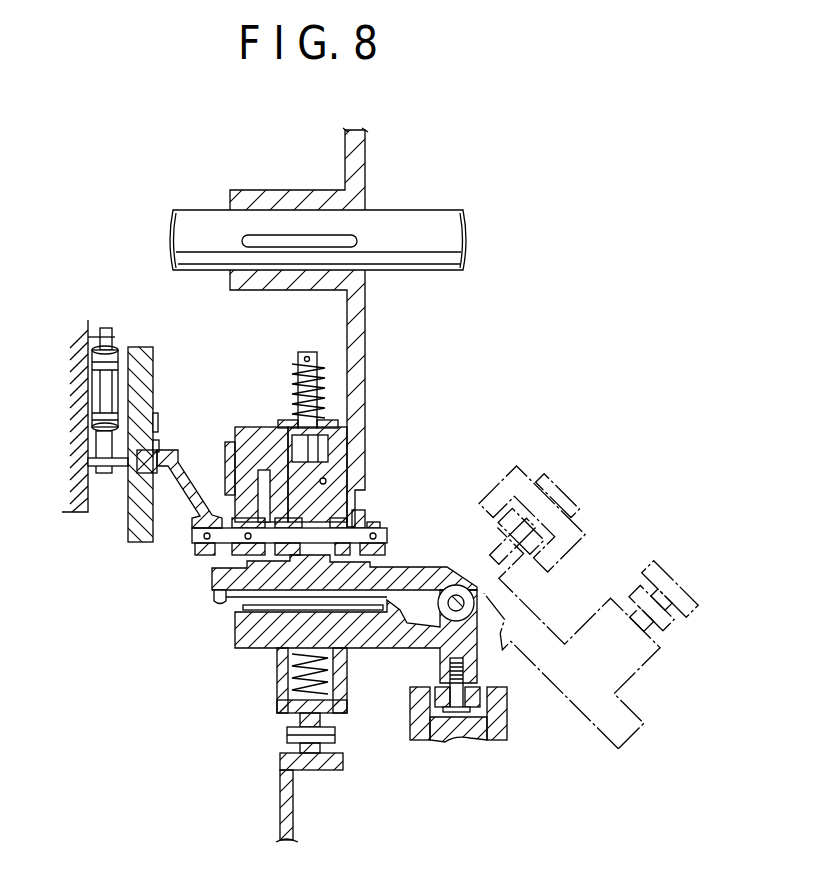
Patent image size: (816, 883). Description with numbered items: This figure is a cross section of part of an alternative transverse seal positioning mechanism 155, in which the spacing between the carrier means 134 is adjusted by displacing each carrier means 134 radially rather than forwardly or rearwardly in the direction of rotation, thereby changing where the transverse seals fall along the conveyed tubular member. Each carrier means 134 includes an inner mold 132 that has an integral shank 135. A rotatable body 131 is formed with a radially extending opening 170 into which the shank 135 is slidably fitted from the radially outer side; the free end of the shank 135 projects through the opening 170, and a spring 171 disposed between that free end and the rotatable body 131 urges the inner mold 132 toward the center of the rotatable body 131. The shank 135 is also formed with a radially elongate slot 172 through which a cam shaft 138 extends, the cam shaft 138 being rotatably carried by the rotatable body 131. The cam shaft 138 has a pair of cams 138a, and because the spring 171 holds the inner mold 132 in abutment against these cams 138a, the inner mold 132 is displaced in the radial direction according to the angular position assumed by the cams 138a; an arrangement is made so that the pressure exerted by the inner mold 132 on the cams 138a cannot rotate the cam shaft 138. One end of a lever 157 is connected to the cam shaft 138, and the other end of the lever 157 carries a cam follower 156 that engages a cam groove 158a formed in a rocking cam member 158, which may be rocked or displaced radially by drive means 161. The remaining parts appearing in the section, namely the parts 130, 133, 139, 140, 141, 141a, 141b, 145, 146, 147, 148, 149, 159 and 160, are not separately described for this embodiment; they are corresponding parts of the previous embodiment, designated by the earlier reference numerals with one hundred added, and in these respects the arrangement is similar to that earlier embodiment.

The shaft 130 is at (430, 225).
The rotatable body 131 is at (365, 318).
The inner mold 132 is at (208, 584).
The body 133 is at (233, 640).
The carrier means 134 is at (230, 625).
The shank 135 is at (307, 353).
The cam shaft 138 is at (188, 540).
The cams 138a is at (262, 487).
The pivot pin 139 is at (455, 586).
The bolt 140 is at (446, 690).
The bracket 141 is at (505, 717).
The stop surface 141a is at (438, 740).
The stop portion 141b is at (552, 525).
The housing 145 is at (280, 697).
The stem 146 is at (312, 710).
The plate 147 is at (343, 757).
The spring 148 is at (278, 690).
The frame 149 is at (280, 805).
The transverse seal positioning mechanism 155 is at (232, 339).
The cam follower 156 is at (147, 478).
The lever 157 is at (185, 487).
The rocking cam member 158 is at (143, 387).
The cam groove 158a is at (147, 455).
The frame 159 is at (80, 322).
The plate 160 is at (90, 448).
The drive means 161 is at (95, 385).
The radially extending opening 170 is at (325, 477).
The spring 171 is at (293, 382).
The radially elongate slot 172 is at (307, 527).